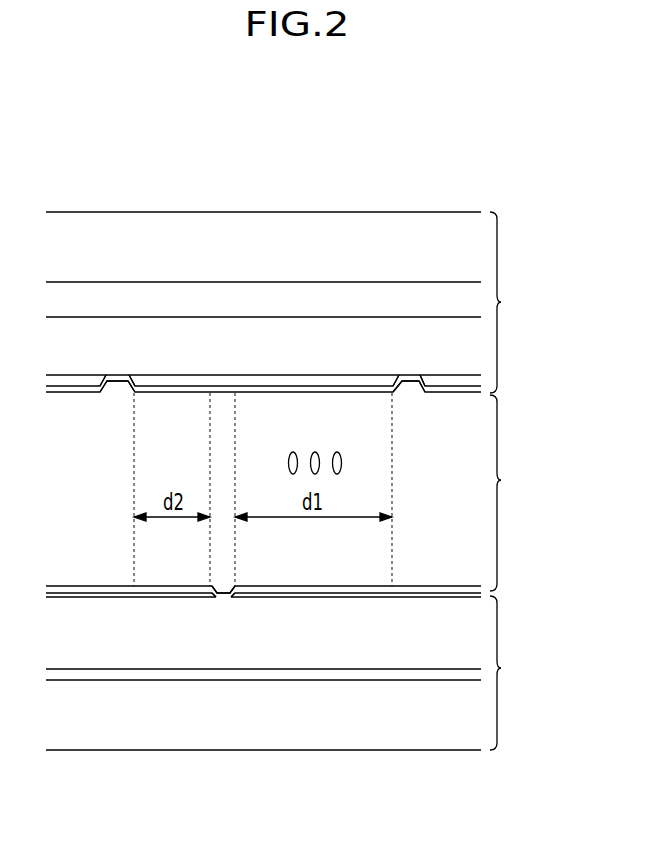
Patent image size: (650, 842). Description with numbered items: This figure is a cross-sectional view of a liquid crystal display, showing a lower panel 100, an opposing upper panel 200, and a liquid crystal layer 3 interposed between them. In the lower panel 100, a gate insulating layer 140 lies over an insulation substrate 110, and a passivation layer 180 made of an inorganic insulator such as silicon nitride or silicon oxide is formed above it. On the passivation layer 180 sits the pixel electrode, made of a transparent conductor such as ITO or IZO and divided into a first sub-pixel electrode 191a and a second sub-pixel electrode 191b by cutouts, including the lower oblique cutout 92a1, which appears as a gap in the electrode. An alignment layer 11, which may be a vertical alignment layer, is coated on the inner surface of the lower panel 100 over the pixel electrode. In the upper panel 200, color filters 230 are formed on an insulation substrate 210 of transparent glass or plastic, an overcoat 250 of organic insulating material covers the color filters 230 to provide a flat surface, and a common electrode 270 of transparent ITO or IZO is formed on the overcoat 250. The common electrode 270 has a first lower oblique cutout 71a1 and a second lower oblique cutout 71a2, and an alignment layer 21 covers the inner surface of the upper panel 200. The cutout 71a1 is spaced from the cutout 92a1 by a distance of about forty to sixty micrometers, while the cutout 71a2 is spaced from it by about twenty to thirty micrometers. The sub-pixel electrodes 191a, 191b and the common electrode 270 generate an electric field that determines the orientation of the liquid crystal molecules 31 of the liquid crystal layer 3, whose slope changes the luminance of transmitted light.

The upper panel 200 is at (514, 302).
The insulation substrate 210 is at (323, 228).
The color filters 230 is at (242, 300).
The overcoat 250 is at (409, 340).
The common electrode 270 is at (165, 381).
The liquid crystal layer 3 is at (327, 492).
The alignment layer 21 is at (264, 394).
The second lower oblique cutout 71a2 is at (108, 388).
The first lower oblique cutout 71a1 is at (420, 384).
The liquid crystal molecules 31 is at (341, 453).
The alignment layer 11 is at (283, 584).
The lower oblique cutout 92a1 is at (214, 585).
The second sub-pixel electrode 191b is at (85, 593).
The first sub-pixel electrode 191a is at (344, 593).
The lower panel 100 is at (514, 673).
The passivation layer 180 is at (143, 643).
The gate insulating layer 140 is at (218, 673).
The insulation substrate 110 is at (297, 738).